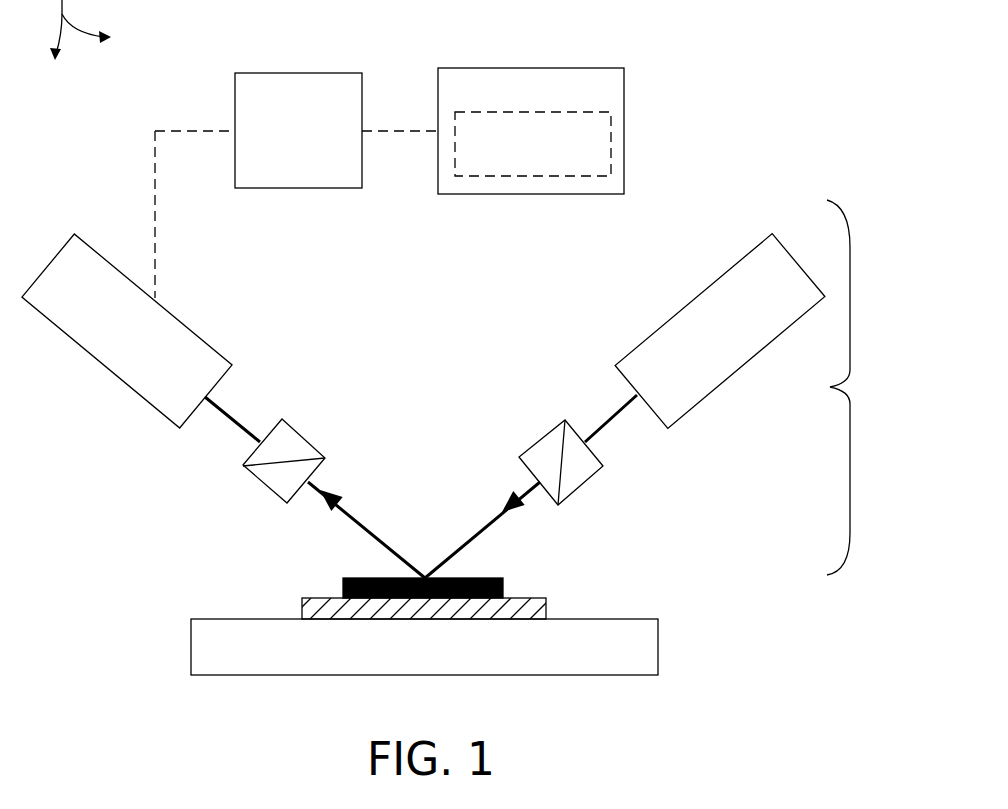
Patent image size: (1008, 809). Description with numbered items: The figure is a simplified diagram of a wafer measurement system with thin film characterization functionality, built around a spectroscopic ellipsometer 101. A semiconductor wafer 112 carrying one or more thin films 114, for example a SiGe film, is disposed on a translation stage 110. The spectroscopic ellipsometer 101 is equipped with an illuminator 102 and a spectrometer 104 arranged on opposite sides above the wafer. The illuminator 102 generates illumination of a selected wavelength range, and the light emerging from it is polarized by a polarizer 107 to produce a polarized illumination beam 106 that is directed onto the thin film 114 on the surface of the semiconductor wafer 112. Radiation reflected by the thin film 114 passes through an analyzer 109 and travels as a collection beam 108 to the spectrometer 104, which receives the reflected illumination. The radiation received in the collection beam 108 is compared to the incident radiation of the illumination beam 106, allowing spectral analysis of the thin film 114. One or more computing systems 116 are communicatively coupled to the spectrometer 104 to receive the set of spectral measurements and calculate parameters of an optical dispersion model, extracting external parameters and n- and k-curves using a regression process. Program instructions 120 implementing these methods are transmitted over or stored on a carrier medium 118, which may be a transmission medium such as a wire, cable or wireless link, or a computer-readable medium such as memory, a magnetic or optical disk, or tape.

The spectroscopic ellipsometer 101 is at (830, 387).
The illuminator 102 is at (690, 298).
The spectrometer 104 is at (198, 332).
The illumination beam 106 is at (617, 423).
The polarizer 107 is at (540, 440).
The collection beam 108 is at (372, 525).
The analyzer 109 is at (260, 487).
The translation stage 110 is at (658, 645).
The semiconductor wafer 112 is at (546, 608).
The thin film 114 is at (505, 588).
The computing system 116 is at (235, 93).
The carrier medium 118 is at (624, 85).
The program instructions 120 is at (611, 128).